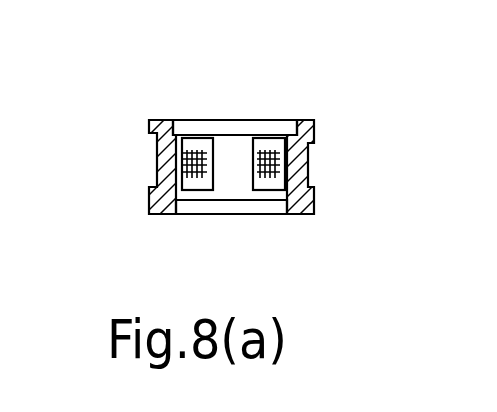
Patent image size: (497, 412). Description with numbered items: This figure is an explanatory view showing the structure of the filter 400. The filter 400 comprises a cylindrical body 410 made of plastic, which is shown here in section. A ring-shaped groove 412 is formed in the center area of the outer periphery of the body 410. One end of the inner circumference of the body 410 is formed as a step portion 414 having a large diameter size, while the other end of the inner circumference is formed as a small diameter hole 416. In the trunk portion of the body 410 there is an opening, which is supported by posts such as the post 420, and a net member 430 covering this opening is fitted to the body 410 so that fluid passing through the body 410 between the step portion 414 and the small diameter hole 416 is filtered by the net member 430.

The filter 400 is at (244, 147).
The cylindrical body 410 is at (298, 156).
The ring-shaped groove 412 is at (150, 168).
The step portion 414 is at (170, 128).
The small diameter hole 416 is at (281, 206).
The post 420 is at (224, 171).
The net member 430 is at (271, 177).